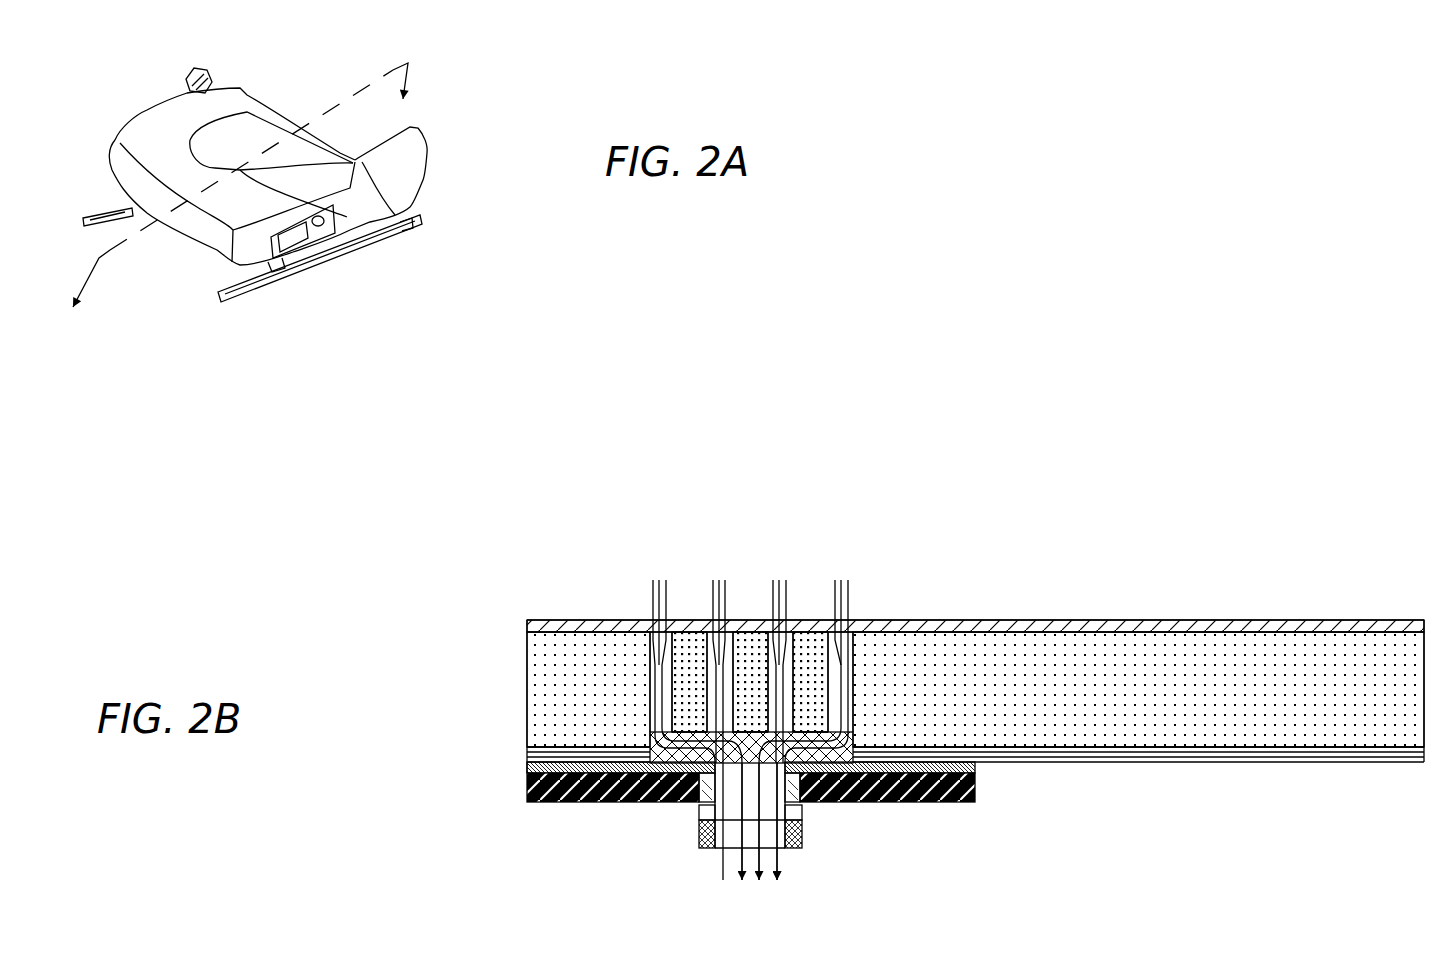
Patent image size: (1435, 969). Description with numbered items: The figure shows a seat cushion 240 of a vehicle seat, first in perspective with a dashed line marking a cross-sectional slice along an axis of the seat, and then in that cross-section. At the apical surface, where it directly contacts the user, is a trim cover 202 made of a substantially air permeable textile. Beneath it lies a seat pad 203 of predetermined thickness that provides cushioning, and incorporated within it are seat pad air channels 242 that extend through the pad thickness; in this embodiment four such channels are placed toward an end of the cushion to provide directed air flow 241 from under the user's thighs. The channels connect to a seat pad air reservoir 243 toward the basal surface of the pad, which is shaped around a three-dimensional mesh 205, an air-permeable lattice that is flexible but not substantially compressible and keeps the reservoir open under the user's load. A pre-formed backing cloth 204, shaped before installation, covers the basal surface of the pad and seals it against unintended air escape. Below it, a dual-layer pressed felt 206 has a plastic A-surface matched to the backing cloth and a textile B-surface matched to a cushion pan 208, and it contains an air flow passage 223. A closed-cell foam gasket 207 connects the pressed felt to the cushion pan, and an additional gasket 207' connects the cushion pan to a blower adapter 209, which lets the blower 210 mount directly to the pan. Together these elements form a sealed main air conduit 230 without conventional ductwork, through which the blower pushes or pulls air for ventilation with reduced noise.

In FIG. 2A, the seat cushion 240 is at (173, 113).
In FIG. 2B, the seat cushion 240 is at (1224, 370).
In FIG. 2B, the trim cover 202 is at (527, 626).
In FIG. 2B, the seat pad 203 is at (527, 663).
In FIG. 2B, the pre-formed backing cloth 204 is at (527, 752).
In FIG. 2B, the dual-layer pressed felt 206 is at (527, 767).
In FIG. 2B, the cushion pan 208 is at (545, 805).
In FIG. 2B, the three-dimensional mesh 205 is at (840, 755).
In FIG. 2B, the gasket 207 is at (654, 807).
In FIG. 2B, the additional gasket 207' is at (858, 817).
In FIG. 2B, the blower adapter 209 is at (698, 817).
In FIG. 2B, the blower 210 is at (800, 845).
In FIG. 2B, the air flow passage 223 is at (873, 801).
In FIG. 2B, the main air conduit 230 is at (728, 803).
In FIG. 2B, the directed air flow 241 is at (663, 570).
In FIG. 2B, the seat pad air channels 242 is at (853, 643).
In FIG. 2B, the seat pad air reservoir 243 is at (655, 735).